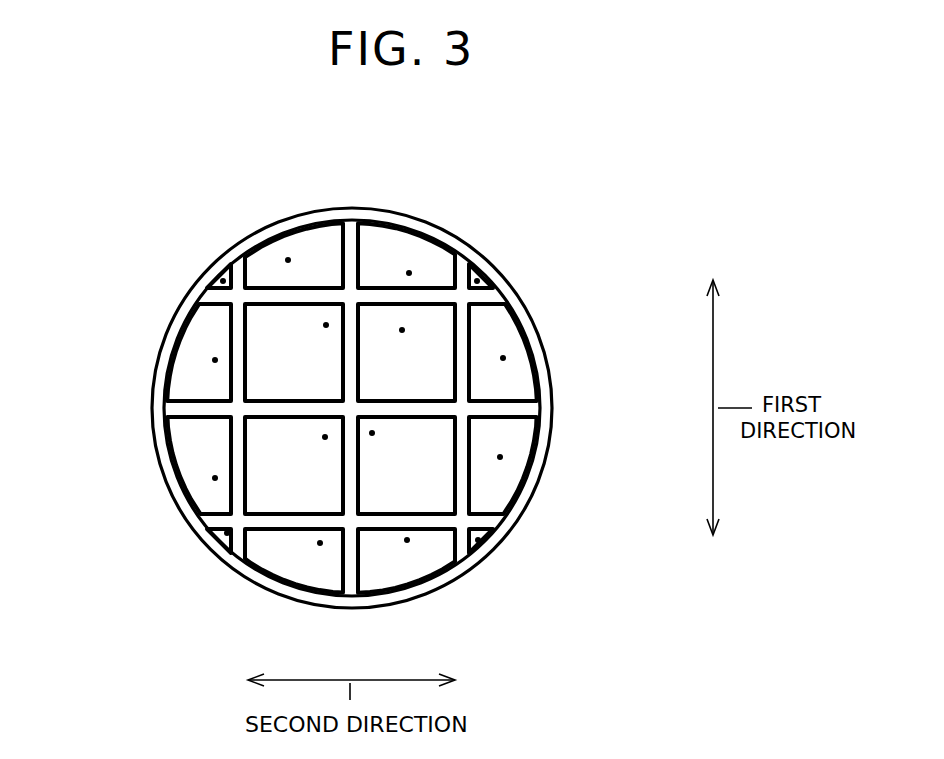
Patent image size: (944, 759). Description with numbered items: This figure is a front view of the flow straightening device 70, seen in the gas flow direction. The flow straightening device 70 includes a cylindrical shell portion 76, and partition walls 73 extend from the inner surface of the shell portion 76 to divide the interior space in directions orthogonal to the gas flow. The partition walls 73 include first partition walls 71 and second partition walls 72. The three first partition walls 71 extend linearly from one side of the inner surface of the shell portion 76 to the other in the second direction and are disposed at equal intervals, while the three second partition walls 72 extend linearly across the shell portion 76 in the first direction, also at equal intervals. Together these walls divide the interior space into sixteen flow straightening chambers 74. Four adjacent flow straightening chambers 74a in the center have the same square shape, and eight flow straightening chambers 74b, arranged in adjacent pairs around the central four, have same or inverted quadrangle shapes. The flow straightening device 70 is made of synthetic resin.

The flow straightening device 70 is at (118, 222).
The first partition walls 71 is at (238, 325).
The second partition walls 72 is at (455, 547).
The partition walls 73 is at (86, 426).
The flow straightening chambers 74 is at (401, 360).
The flow straightening chambers 74a is at (325, 437).
The flow straightening chambers 74b is at (217, 360).
The shell portion 76 is at (425, 222).